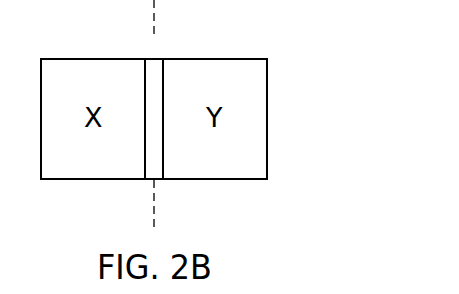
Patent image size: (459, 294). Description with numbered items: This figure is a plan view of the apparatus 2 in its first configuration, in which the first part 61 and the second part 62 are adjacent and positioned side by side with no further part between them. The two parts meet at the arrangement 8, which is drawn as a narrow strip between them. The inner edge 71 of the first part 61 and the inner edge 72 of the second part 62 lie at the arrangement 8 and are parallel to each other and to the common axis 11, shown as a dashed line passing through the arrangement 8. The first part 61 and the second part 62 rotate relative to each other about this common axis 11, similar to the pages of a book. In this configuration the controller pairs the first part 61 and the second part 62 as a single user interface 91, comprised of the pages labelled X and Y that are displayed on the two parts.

The apparatus 2 is at (270, 38).
The first part 61 is at (80, 57).
The second part 62 is at (197, 57).
The arrangement 8 is at (155, 58).
The inner edge of the first part 71 is at (143, 102).
The inner edge of the second part 72 is at (165, 72).
The user interface 91 is at (128, 199).
The common axis 11 is at (155, 207).